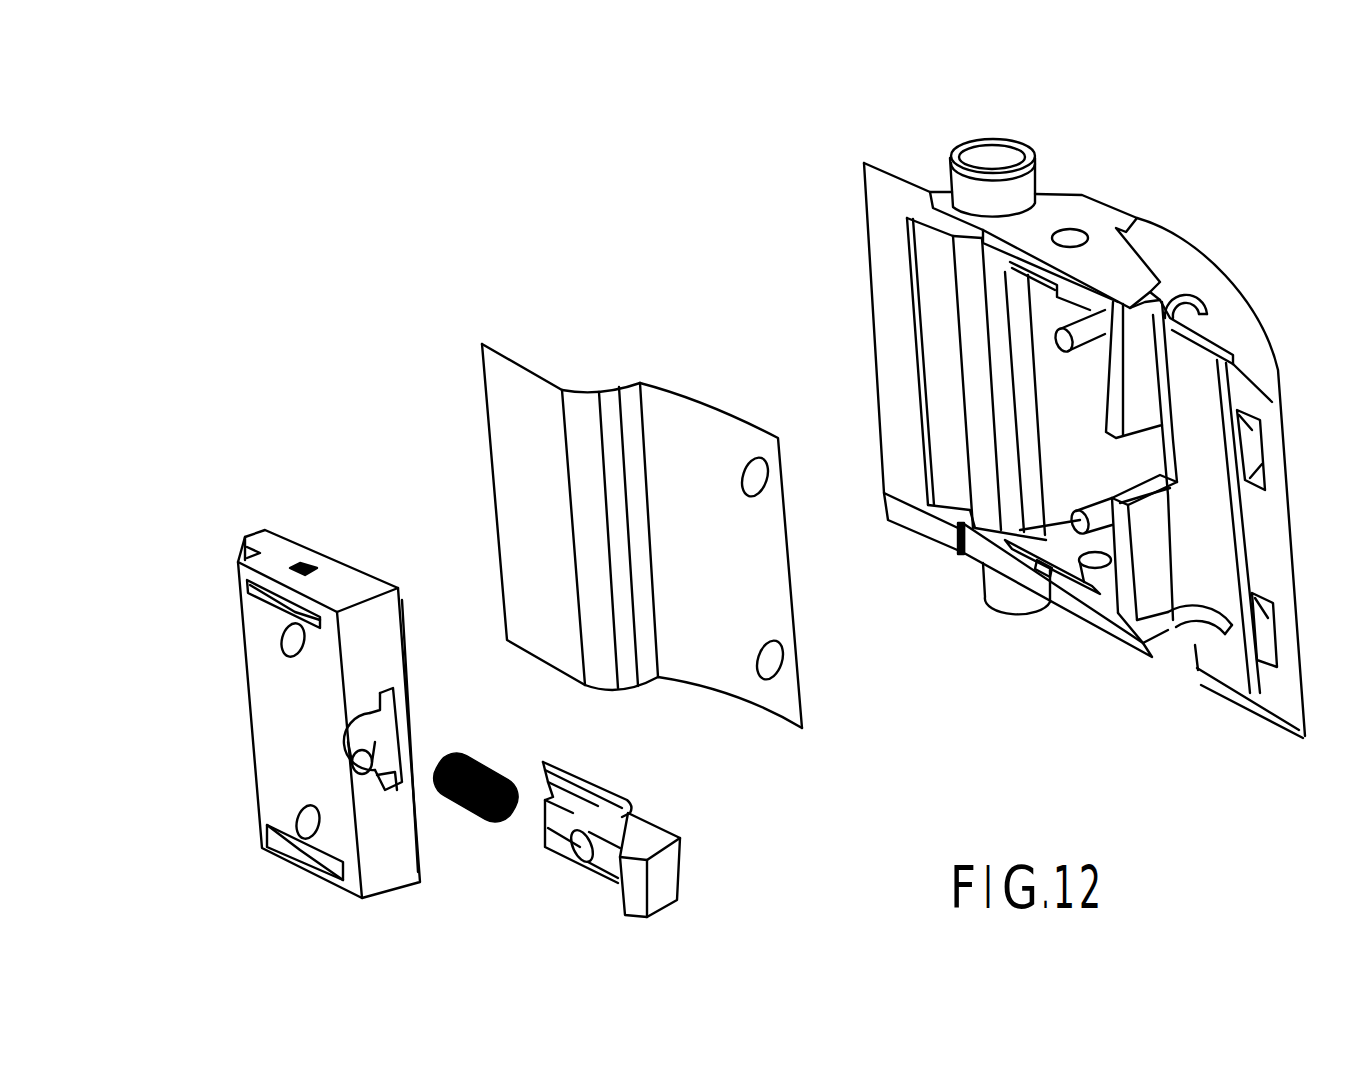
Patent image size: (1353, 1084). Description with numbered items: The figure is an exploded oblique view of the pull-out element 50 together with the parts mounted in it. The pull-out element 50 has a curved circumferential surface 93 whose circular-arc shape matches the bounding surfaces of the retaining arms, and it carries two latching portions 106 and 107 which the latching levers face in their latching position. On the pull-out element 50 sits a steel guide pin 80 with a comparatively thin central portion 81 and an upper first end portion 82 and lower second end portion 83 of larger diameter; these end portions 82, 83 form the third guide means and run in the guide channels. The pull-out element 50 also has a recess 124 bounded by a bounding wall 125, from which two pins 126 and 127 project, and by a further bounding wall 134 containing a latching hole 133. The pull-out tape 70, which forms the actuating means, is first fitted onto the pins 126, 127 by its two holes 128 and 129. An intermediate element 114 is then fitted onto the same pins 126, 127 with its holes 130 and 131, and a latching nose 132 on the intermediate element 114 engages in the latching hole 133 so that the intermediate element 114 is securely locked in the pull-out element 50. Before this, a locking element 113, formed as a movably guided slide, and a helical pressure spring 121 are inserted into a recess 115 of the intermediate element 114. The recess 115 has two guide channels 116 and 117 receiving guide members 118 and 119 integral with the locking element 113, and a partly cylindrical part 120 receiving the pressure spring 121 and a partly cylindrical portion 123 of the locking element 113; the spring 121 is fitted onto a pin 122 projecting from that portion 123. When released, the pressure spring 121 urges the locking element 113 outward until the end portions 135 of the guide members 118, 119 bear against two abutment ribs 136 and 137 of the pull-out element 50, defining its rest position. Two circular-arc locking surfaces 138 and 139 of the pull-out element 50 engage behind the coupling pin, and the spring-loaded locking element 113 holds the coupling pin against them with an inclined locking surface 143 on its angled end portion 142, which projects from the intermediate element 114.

The pull-out element 50 is at (1078, 436).
The pull-out tape 70 is at (642, 522).
The guide pin 80 is at (1048, 158).
The central portion 81 is at (997, 347).
The first end portion 82 is at (1022, 184).
The second end portion 83 is at (995, 597).
The curved circumferential surface 93 is at (1270, 337).
The latching portion 106 is at (1188, 325).
The latching portion 107 is at (1196, 668).
The locking element 113 is at (635, 824).
The intermediate element 114 is at (299, 703).
The recess 115 is at (370, 710).
The guide channel 116 is at (395, 697).
The guide channel 117 is at (396, 790).
The guide member 118 is at (558, 762).
The guide member 119 is at (546, 846).
The partly cylindrical part 120 is at (350, 743).
The helical pressure spring 121 is at (455, 760).
The pin 122 is at (585, 840).
The partly cylindrical portion 123 is at (608, 858).
The recess 124 is at (1100, 615).
The bounding wall 125 is at (1060, 402).
The pin 126 is at (1060, 340).
The pin 127 is at (1082, 518).
The hole 128 is at (770, 475).
The hole 129 is at (785, 658).
The hole 130 is at (278, 638).
The hole 131 is at (288, 815).
The latching nose 132 is at (302, 566).
The latching hole 133 is at (1088, 568).
The bounding wall 134 is at (1017, 538).
The end portion 135 is at (631, 808).
The abutment rib 136 is at (1112, 422).
The abutment rib 137 is at (1140, 507).
The locking surface 138 is at (1198, 300).
The locking surface 139 is at (1203, 632).
The angled end portion 142 is at (664, 850).
The locking surface 143 is at (688, 870).